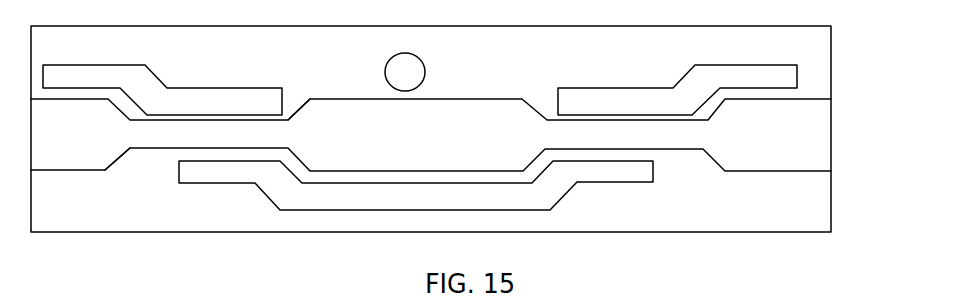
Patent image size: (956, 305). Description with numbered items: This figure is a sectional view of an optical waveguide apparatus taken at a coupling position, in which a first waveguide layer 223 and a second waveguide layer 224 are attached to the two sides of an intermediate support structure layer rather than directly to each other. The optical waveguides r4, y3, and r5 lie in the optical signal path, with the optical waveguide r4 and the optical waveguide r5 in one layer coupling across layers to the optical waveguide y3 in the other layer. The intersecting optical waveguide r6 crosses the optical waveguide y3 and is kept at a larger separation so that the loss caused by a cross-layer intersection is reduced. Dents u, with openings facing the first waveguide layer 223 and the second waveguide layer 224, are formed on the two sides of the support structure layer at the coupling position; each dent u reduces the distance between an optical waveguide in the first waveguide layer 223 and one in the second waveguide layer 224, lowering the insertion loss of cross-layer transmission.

The first waveguide layer 223 is at (833, 63).
The second waveguide layer 224 is at (833, 137).
The optical waveguide r4 is at (268, 87).
The optical waveguide r5 is at (577, 87).
The intersecting optical waveguide r6 is at (425, 69).
The optical waveguide y3 is at (617, 184).
The dent u is at (296, 97).